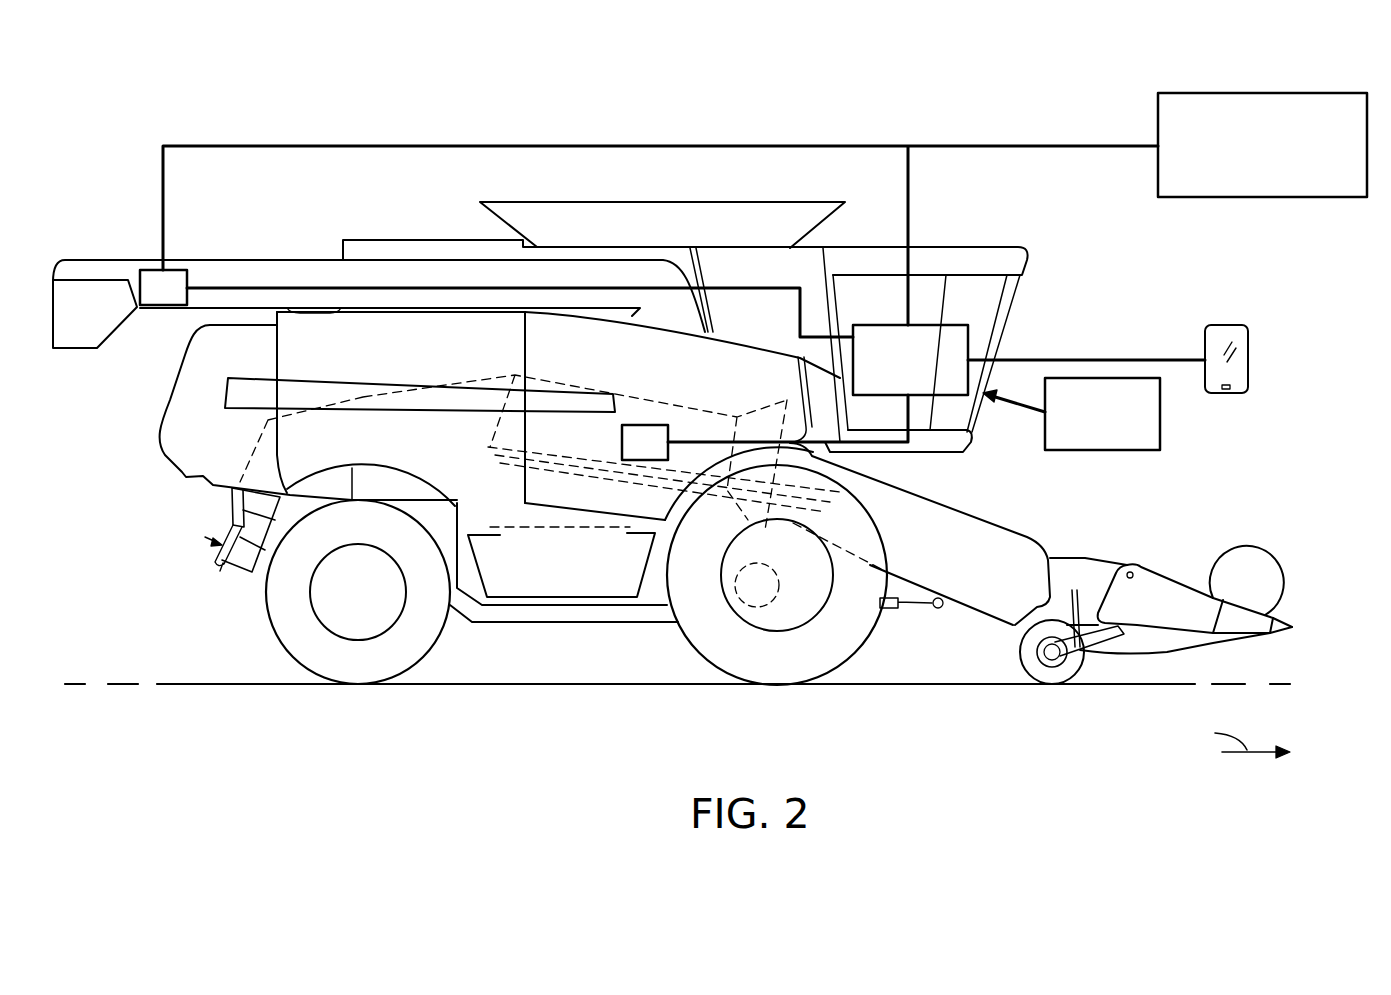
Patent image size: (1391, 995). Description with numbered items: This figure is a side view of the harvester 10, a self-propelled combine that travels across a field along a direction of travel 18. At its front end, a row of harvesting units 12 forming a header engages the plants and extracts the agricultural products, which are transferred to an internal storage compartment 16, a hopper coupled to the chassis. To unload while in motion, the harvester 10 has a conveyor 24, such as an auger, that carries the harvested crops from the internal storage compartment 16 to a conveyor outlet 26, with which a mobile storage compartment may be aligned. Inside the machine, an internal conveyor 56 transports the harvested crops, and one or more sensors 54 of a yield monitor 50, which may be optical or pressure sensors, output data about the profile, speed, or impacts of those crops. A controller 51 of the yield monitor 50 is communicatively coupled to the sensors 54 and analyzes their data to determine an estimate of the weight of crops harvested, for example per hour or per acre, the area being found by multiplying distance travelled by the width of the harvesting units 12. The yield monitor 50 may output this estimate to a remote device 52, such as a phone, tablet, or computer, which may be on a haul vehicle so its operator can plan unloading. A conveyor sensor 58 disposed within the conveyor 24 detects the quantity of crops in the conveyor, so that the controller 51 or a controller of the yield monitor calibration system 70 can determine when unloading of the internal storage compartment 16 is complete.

The harvester 10 is at (140, 178).
The harvesting units 12 is at (562, 328).
The internal storage compartment 16 is at (720, 215).
The direction of travel 18 is at (1236, 739).
The conveyor 24 is at (240, 272).
The conveyor outlet 26 is at (72, 330).
The yield monitor 50 is at (1160, 432).
The controller 51 is at (972, 337).
The remote device 52 is at (1250, 360).
The sensors 54 is at (645, 425).
The internal conveyor 56 is at (490, 448).
The conveyor sensor 58 is at (150, 268).
The yield monitor calibration system 70 is at (1158, 108).